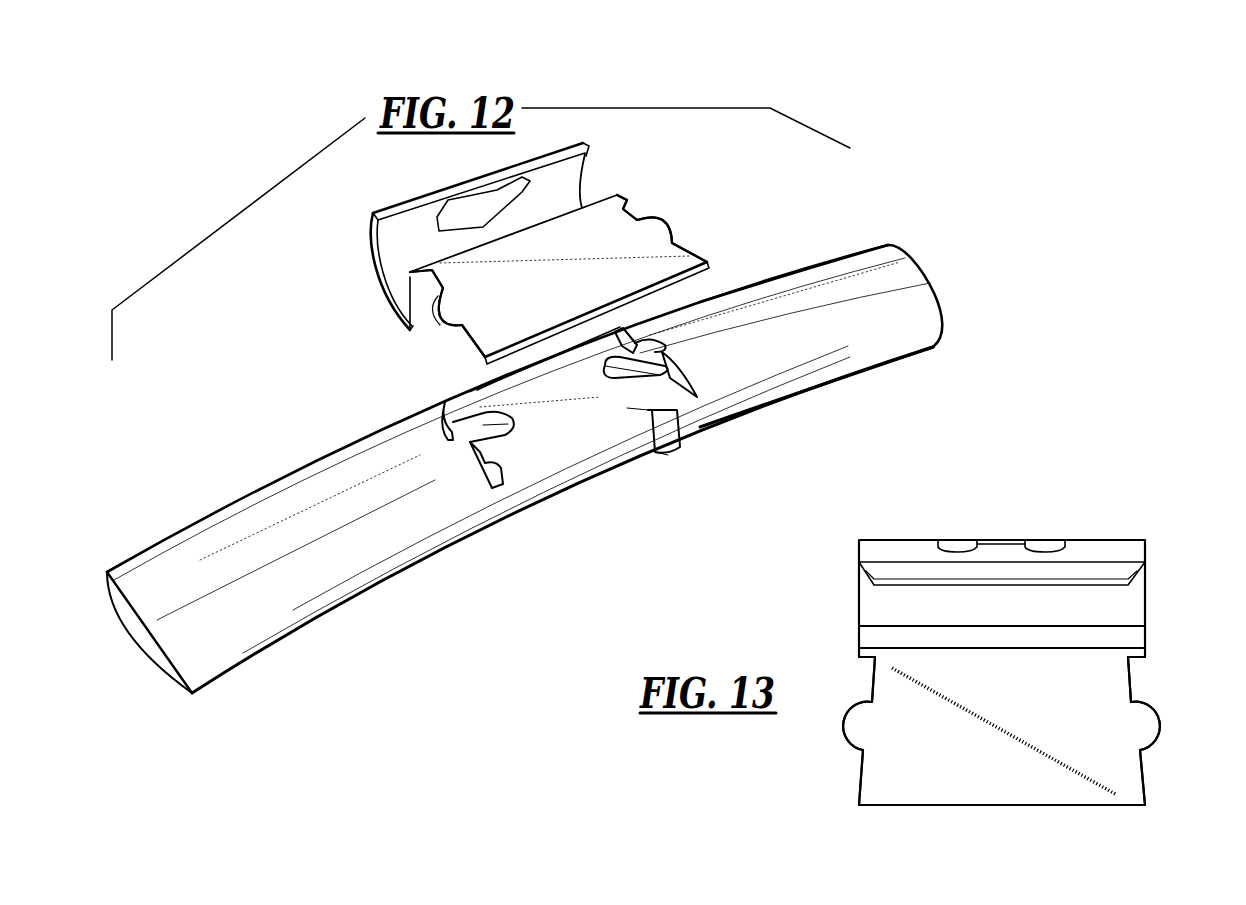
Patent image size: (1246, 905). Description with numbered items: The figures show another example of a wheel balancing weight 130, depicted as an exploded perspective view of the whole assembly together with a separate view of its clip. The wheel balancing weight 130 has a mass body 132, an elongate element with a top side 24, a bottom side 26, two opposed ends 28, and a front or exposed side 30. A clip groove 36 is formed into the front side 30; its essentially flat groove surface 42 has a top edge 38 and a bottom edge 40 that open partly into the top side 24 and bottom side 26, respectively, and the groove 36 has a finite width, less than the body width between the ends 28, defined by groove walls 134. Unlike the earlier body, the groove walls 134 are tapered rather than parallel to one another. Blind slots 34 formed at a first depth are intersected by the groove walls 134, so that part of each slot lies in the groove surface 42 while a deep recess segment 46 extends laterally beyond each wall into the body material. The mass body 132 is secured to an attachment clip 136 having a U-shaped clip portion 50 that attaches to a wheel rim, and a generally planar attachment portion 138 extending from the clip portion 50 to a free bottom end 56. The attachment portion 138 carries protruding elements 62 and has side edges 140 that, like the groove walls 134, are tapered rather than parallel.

In FIG. 12, the top side 24 is at (257, 486).
In FIG. 12, the bottom side 26 is at (720, 403).
In FIG. 12, the opposed ends 28 is at (150, 638).
In FIG. 12, the front side 30 is at (348, 496).
In FIG. 12, the blind slots 34 is at (625, 382).
In FIG. 12, the clip groove 36 is at (522, 371).
In FIG. 12, the top edge 38 is at (557, 350).
In FIG. 12, the bottom edge 40 is at (630, 408).
In FIG. 12, the groove surface 42 is at (663, 413).
In FIG. 12, the deep recess segments 46 is at (470, 440).
In FIG. 12, the clip portion 50 is at (367, 263).
In FIG. 13, the clip portion 50 is at (908, 538).
In FIG. 12, the free bottom end 56 is at (677, 284).
In FIG. 13, the free bottom end 56 is at (943, 807).
In FIG. 12, the protruding elements 62 is at (664, 232).
In FIG. 13, the protruding elements 62 is at (863, 728).
In FIG. 12, the wheel balancing weight 130 is at (722, 88).
In FIG. 12, the mass body 132 is at (822, 285).
In FIG. 12, the groove walls 134 is at (494, 430).
In FIG. 12, the attachment clip 136 is at (544, 257).
In FIG. 13, the attachment clip 136 is at (995, 639).
In FIG. 12, the attachment portion 138 is at (622, 242).
In FIG. 13, the attachment portion 138 is at (1017, 780).
In FIG. 12, the side edges 140 is at (692, 248).
In FIG. 13, the side edges 140 is at (873, 683).